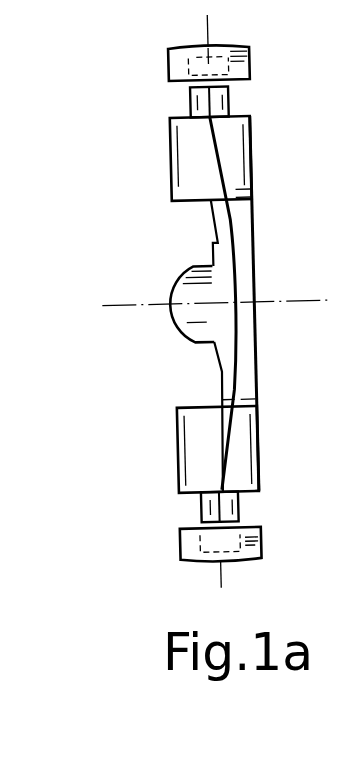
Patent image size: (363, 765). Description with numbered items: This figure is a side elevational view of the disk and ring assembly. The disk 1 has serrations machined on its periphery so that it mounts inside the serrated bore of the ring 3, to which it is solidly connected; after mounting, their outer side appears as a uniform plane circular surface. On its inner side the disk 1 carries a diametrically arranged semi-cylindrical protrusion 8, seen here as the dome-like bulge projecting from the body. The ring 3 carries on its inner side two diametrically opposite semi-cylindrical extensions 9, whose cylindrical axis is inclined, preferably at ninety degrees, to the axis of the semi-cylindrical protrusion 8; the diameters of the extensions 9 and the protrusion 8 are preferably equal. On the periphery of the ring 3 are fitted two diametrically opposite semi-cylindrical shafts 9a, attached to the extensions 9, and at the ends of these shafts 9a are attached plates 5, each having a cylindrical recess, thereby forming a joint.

The disk 1 is at (245, 253).
The ring 3 is at (222, 304).
The plates 5 is at (240, 57).
The semi-cylindrical protrusion 8 is at (195, 320).
The semi-cylindrical extensions 9 is at (192, 150).
The semi-cylindrical shafts 9a is at (192, 97).